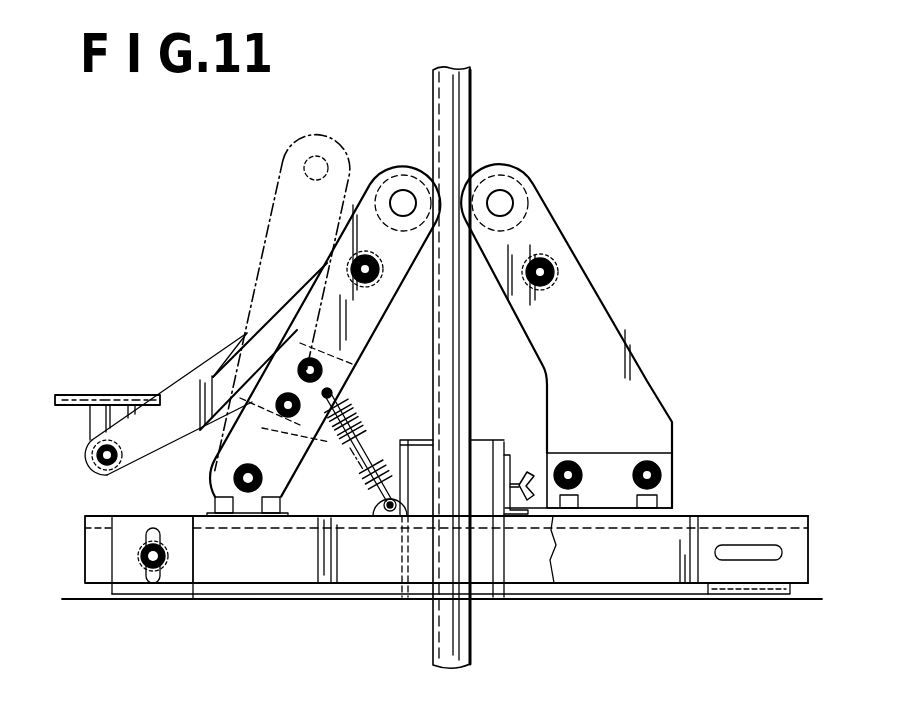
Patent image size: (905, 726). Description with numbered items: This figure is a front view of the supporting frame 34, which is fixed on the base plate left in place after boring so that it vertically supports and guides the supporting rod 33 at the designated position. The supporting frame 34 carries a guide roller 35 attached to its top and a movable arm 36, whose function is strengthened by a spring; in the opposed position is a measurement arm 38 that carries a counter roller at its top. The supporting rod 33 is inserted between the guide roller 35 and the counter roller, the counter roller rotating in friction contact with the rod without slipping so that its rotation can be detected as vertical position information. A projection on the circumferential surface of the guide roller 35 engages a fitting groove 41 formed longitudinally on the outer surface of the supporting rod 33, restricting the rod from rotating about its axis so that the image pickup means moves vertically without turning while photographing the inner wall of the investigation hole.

The supporting rod 33 is at (453, 152).
The supporting frame 34 is at (228, 210).
The guide roller 35 is at (403, 220).
The movable arm 36 is at (333, 328).
The measurement arm 38 is at (587, 362).
The fitting groove 41 is at (433, 113).